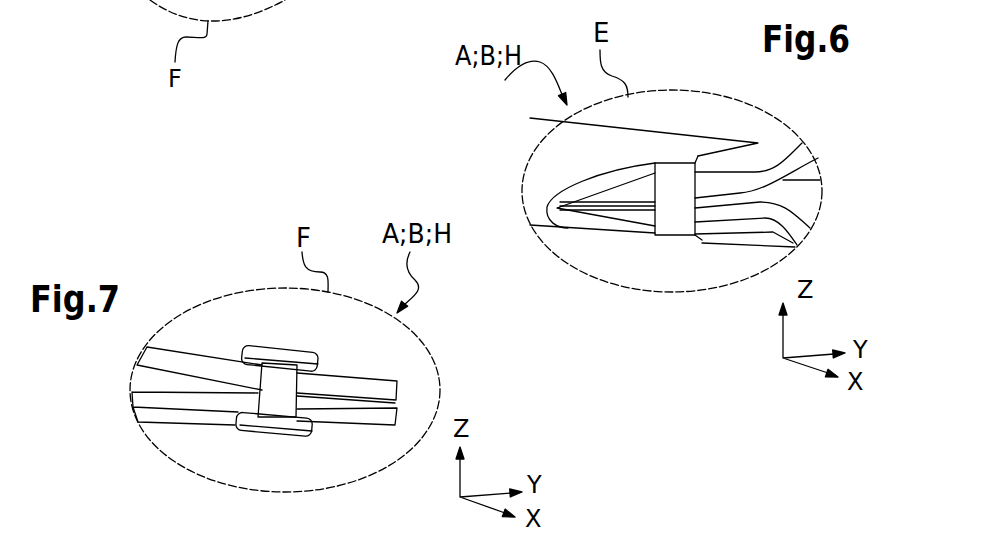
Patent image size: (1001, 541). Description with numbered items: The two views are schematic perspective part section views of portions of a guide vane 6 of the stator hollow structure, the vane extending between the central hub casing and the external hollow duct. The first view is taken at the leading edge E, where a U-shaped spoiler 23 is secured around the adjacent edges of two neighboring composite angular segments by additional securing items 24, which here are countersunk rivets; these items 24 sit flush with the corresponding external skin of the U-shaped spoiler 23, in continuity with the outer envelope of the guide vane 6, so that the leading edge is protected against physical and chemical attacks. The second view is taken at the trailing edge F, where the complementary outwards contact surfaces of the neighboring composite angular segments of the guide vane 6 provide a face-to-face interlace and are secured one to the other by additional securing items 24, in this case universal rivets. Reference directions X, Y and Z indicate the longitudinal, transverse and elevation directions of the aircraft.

In FIG. 6, the guide vane 6 is at (727, 120).
In FIG. 7, the guide vane 6 is at (207, 368).
In FIG. 6, the U-shaped spoiler 23 is at (563, 157).
In FIG. 6, the additional securing items 24 is at (668, 185).
In FIG. 7, the additional securing items 24 is at (268, 425).